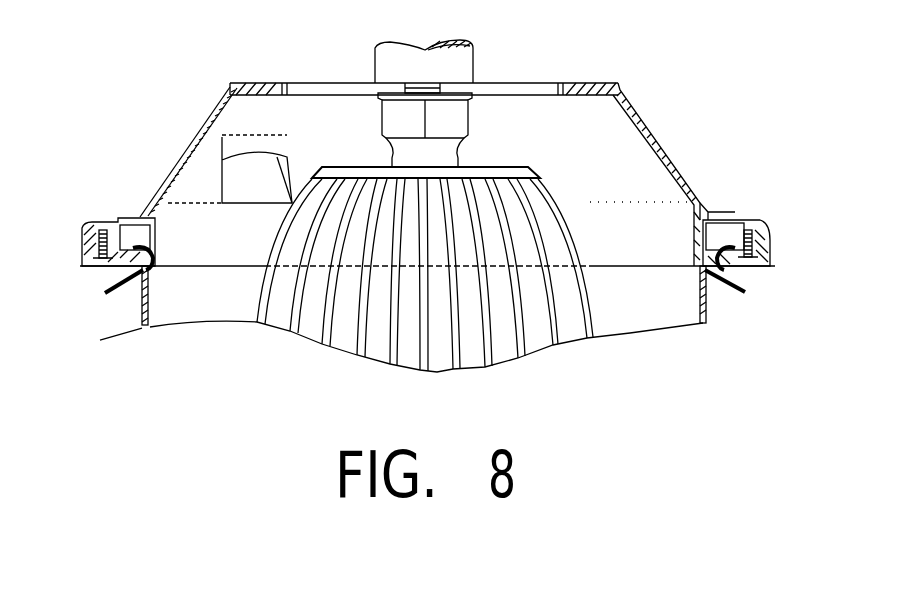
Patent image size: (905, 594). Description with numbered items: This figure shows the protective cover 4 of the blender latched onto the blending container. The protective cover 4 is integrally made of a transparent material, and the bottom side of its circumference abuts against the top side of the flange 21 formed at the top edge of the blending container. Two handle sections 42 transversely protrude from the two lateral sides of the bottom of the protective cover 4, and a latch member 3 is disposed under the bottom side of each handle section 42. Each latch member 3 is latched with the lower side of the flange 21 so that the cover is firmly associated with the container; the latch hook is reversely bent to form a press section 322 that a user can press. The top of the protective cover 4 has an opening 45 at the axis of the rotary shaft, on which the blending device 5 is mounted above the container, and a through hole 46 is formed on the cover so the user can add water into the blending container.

The latch member 3 is at (97, 295).
The protective cover 4 is at (207, 122).
The blending device 5 is at (460, 153).
The flange 21 is at (722, 216).
The handle section 42 is at (100, 218).
The opening 45 is at (307, 90).
The through hole 46 is at (253, 177).
The press section 322 is at (125, 297).